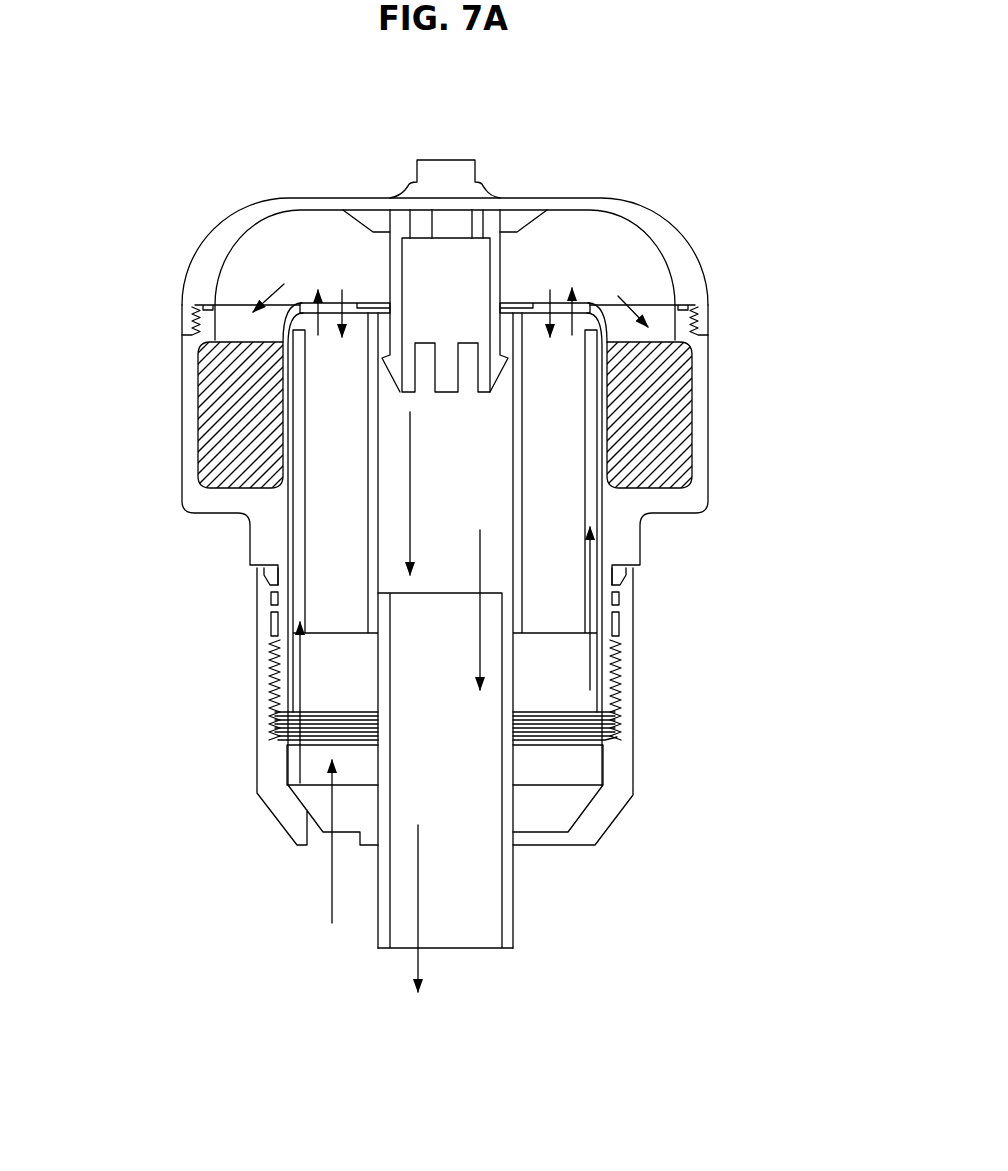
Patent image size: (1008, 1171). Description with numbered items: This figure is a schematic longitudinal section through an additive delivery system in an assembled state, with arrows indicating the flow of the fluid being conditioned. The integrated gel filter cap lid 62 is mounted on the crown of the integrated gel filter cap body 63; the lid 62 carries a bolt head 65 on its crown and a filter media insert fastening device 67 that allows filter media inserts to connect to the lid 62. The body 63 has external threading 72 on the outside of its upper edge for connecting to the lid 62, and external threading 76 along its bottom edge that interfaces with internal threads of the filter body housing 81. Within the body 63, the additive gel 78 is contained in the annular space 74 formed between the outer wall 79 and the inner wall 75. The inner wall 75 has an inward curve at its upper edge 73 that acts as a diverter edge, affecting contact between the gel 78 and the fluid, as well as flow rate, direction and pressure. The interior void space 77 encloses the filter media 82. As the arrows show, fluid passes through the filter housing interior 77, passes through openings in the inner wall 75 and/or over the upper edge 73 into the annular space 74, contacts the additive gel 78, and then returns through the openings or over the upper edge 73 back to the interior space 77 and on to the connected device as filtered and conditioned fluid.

The integrated gel filter cap lid 62 is at (697, 235).
The integrated gel filter cap body 63 is at (732, 490).
The bolt head 65 is at (442, 175).
The filter media insert fastening device 67 is at (448, 268).
The external threading 72 is at (187, 323).
The upper edge (diverter edge) 73 is at (299, 316).
The annular space 74 is at (658, 325).
The inner wall 75 is at (274, 440).
The external threading 76 is at (262, 680).
The interior void space 77 is at (322, 660).
The additive gel 78 is at (232, 419).
The outer wall 79 is at (173, 433).
The filter body housing 81 is at (688, 758).
The filter media 82 is at (553, 565).